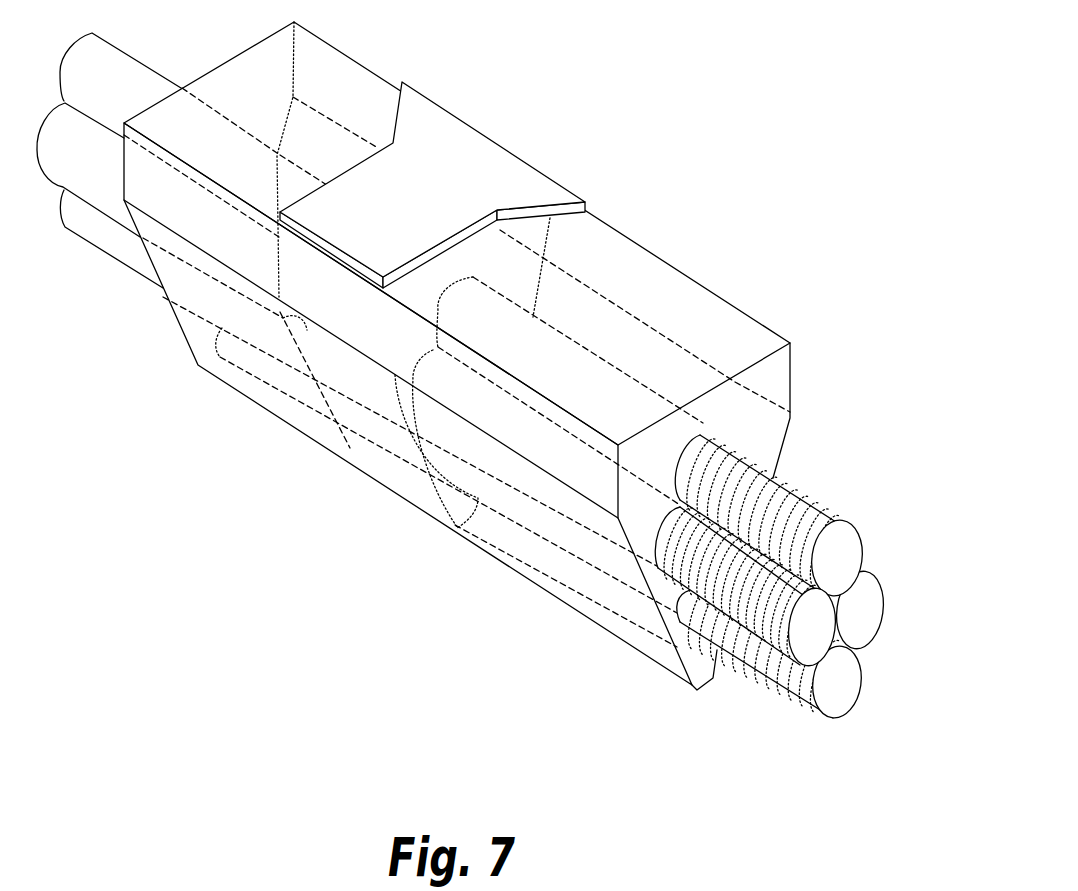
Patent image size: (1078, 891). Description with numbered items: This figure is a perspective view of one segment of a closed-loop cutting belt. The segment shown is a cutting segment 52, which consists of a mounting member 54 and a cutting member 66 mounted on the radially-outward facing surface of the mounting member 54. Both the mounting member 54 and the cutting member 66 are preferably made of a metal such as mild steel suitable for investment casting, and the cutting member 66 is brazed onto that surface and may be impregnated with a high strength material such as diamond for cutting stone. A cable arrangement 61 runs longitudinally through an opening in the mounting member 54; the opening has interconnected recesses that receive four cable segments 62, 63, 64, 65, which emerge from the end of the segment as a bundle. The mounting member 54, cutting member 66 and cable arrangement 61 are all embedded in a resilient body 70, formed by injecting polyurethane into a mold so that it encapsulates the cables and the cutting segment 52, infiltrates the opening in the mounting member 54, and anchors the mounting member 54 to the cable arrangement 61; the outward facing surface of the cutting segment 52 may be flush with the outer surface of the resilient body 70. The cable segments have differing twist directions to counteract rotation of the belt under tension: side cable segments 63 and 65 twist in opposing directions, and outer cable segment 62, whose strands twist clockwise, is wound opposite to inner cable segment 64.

The cutting segment 52 is at (496, 407).
The mounting member 54 is at (372, 458).
The cable arrangement 61 is at (496, 413).
The cable segment 62 is at (845, 553).
The cable segment 63 is at (864, 612).
The cable segment 64 is at (832, 700).
The cable segment 65 is at (807, 650).
The cutting member 66 is at (442, 143).
The resilient body 70 is at (757, 343).